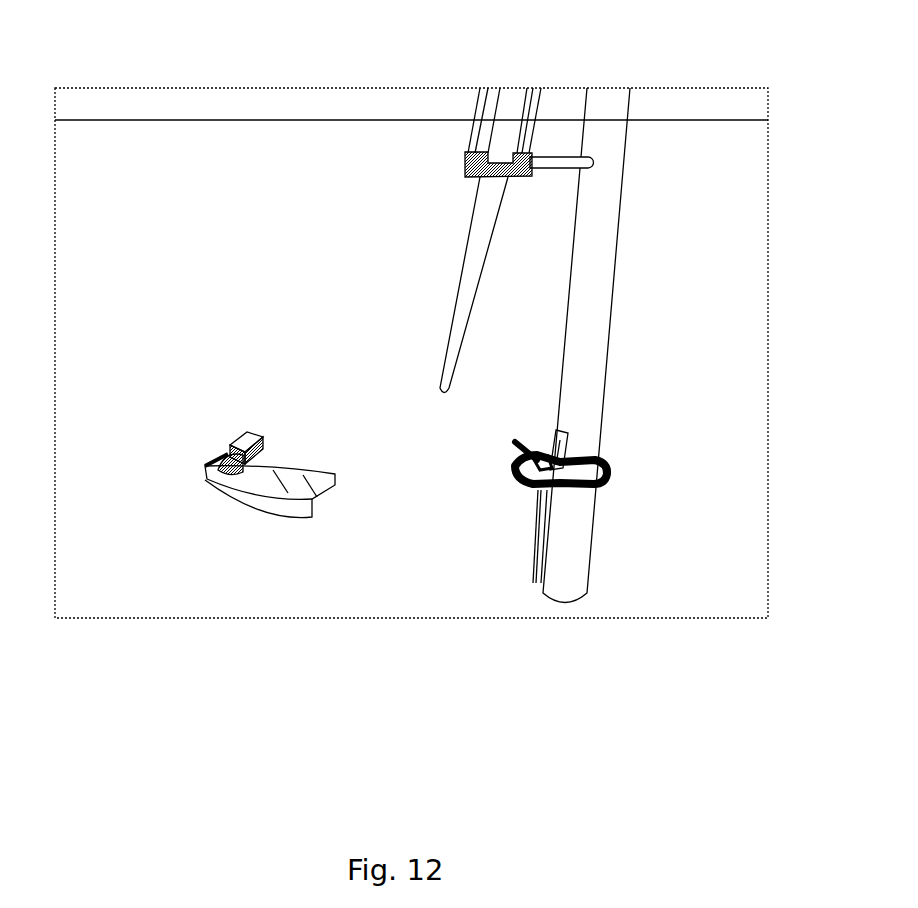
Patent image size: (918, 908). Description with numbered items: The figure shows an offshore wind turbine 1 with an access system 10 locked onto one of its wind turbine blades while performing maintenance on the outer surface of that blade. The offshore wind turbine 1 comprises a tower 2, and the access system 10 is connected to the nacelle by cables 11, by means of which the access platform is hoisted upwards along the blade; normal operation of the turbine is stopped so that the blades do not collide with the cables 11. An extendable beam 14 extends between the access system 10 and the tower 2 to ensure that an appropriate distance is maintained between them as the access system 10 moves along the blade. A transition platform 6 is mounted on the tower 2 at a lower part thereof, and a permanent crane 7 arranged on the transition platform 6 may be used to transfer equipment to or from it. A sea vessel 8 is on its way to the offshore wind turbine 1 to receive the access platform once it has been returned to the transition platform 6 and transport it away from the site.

The offshore wind turbine 1 is at (693, 98).
The tower 2 is at (583, 397).
The transition platform 6 is at (540, 478).
The permanent crane 7 is at (520, 450).
The sea vessel 8 is at (260, 497).
The access system 10 is at (472, 173).
The cables 11 is at (472, 135).
The extendable beam 14 is at (563, 163).